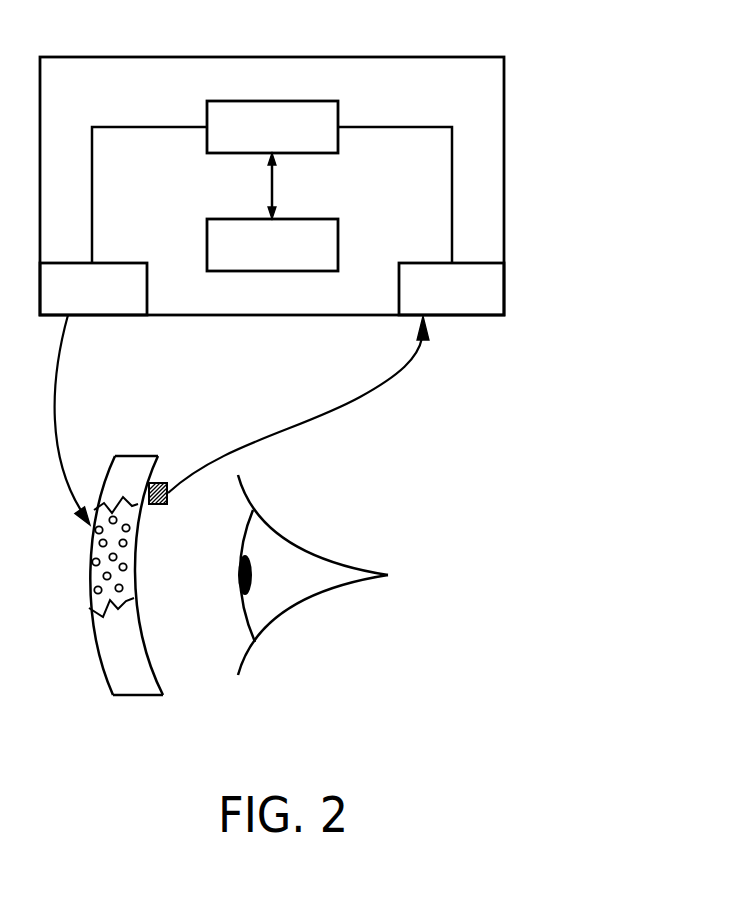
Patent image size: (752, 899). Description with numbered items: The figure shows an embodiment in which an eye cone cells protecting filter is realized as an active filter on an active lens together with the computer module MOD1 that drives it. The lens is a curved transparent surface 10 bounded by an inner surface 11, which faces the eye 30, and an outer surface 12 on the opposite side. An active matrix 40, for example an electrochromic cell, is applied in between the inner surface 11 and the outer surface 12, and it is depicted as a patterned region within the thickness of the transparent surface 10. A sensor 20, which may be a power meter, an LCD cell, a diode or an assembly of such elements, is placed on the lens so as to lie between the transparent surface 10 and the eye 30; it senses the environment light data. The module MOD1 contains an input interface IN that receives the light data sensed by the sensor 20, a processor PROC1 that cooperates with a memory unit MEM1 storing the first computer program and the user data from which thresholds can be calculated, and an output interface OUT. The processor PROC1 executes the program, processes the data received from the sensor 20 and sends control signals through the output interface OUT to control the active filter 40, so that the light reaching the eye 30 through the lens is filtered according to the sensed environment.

The transparent surface 10 is at (147, 586).
The inner surface 11 is at (97, 506).
The outer surface 12 is at (157, 678).
The sensor 20 is at (170, 487).
The eye 30 is at (348, 567).
The active filter 40 is at (88, 580).
The computer module MOD1 is at (504, 163).
The processor PROC1 is at (272, 127).
The memory unit MEM1 is at (272, 245).
The output interface OUT is at (93, 289).
The input interface IN is at (451, 289).